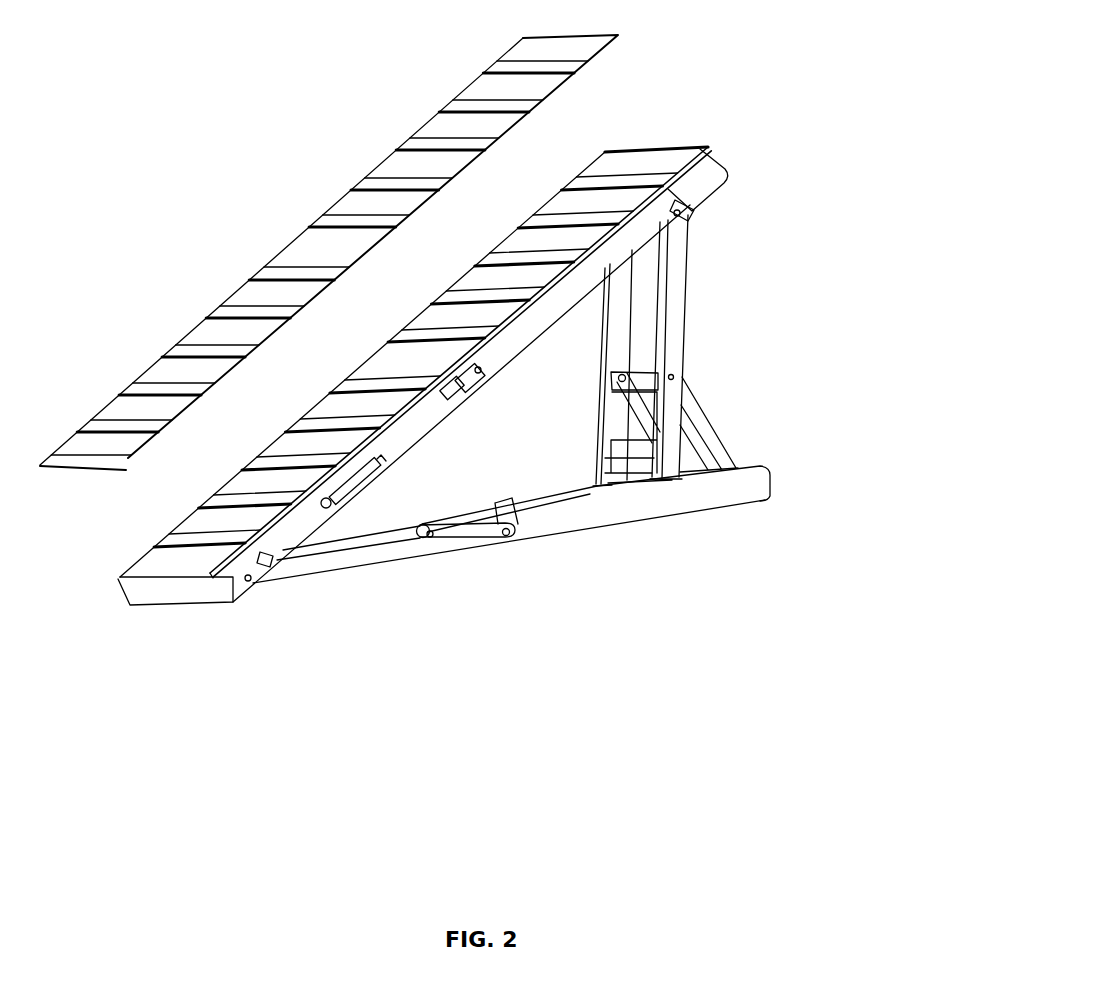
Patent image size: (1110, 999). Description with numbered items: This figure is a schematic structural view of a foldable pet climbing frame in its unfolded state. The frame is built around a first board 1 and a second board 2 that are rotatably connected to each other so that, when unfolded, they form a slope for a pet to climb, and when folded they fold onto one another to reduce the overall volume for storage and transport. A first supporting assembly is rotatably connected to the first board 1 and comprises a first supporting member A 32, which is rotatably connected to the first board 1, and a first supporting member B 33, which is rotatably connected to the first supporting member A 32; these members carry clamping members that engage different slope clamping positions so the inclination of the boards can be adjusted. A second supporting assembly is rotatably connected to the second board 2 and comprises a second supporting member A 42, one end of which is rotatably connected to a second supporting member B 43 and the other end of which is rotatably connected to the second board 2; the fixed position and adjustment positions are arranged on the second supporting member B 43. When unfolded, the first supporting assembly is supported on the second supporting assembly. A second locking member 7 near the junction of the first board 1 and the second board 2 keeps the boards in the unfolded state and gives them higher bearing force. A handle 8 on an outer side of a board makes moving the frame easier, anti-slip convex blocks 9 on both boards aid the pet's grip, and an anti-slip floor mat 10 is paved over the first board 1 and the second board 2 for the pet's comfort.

The first board 1 is at (604, 266).
The second board 2 is at (405, 440).
The second locking member 7 is at (472, 393).
The handle 8 is at (355, 502).
The anti-slip convex blocks 9 is at (627, 183).
The anti-slip floor mat 10 is at (623, 33).
The first supporting member A 32 is at (682, 345).
The first supporting member B 33 is at (708, 420).
The second supporting member A 42 is at (337, 567).
The second supporting member B 43 is at (657, 503).